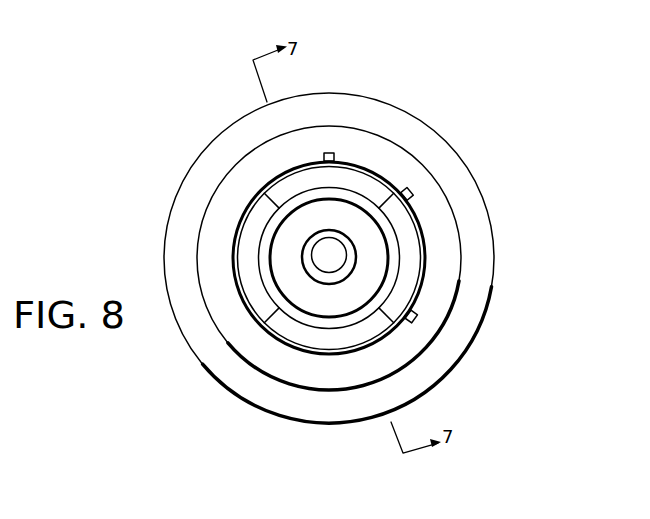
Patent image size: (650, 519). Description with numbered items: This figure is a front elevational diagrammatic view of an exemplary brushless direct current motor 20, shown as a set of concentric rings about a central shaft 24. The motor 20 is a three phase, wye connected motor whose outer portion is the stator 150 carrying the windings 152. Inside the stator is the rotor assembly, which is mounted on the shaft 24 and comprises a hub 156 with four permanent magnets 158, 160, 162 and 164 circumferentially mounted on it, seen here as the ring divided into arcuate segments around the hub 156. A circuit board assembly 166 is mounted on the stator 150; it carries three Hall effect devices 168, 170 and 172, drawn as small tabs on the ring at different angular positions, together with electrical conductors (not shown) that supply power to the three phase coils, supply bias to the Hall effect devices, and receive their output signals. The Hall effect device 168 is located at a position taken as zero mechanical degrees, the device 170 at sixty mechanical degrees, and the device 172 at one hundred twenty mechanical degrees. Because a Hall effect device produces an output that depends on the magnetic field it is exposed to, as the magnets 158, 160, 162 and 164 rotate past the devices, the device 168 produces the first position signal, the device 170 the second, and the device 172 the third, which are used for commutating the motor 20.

The brushless direct current motor 20 is at (488, 157).
The shaft 24 is at (323, 258).
The stator 150 is at (203, 348).
The windings 152 is at (260, 352).
The hub 156 is at (307, 300).
The permanent magnet 158 is at (297, 184).
The permanent magnet 160 is at (247, 233).
The permanent magnet 162 is at (347, 334).
The permanent magnet 164 is at (415, 276).
The circuit board assembly 166 is at (440, 232).
The Hall effect device 168 is at (328, 152).
The Hall effect device 170 is at (413, 192).
The Hall effect device 172 is at (413, 316).